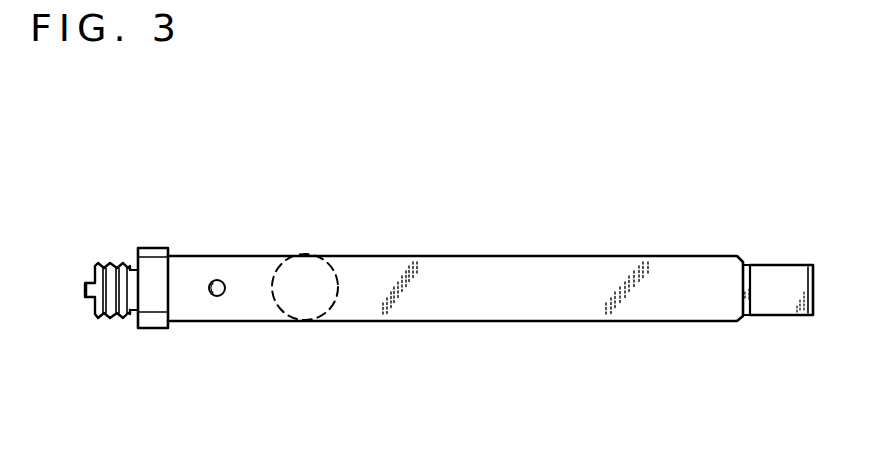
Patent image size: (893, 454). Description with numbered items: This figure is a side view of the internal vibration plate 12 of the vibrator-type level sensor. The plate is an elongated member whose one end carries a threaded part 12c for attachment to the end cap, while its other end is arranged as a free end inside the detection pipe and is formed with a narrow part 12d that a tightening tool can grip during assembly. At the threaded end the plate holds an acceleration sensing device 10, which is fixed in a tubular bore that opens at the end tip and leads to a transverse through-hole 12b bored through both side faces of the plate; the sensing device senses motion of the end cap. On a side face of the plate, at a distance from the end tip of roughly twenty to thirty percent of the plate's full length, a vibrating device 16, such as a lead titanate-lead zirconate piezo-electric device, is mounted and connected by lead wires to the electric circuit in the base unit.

The acceleration sensing device 10 is at (94, 266).
The internal vibration plate 12 is at (550, 267).
The transverse through-hole 12b is at (221, 282).
The threaded part 12c is at (115, 267).
The narrow part 12d is at (780, 273).
The vibrating device 16 is at (332, 270).